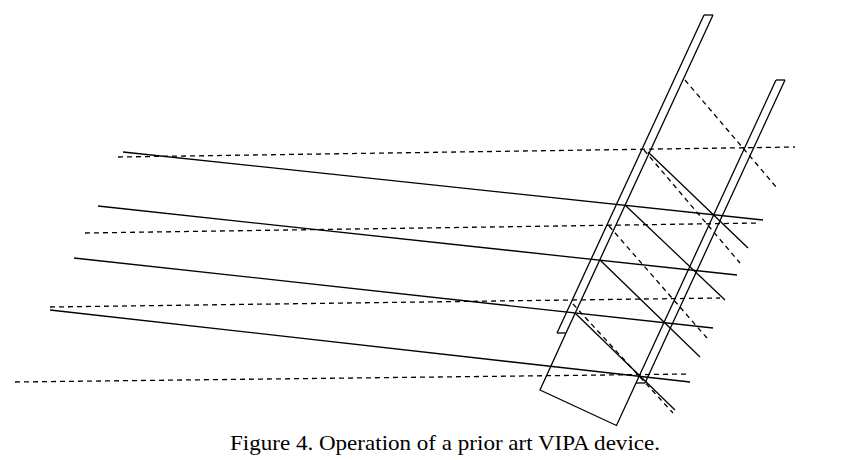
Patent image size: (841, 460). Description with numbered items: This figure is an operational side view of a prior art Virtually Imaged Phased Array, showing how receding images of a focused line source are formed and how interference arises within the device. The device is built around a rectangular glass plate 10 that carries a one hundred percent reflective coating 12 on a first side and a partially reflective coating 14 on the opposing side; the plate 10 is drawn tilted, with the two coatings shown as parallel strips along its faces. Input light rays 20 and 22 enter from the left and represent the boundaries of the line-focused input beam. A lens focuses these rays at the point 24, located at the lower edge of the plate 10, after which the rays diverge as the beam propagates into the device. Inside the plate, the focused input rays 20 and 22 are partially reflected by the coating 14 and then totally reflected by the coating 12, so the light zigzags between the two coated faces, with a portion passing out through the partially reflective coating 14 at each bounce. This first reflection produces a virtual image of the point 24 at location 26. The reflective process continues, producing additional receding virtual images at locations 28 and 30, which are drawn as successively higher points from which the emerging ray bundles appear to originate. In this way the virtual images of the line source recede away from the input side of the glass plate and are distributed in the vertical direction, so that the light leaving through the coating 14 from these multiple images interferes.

The glass plate 10 is at (682, 220).
The reflective coating 12 is at (635, 174).
The partially reflective coating 14 is at (783, 110).
The input light ray 20 is at (352, 388).
The input light ray 22 is at (370, 346).
The focal point 24 is at (639, 380).
The virtual image location 26 is at (393, 293).
The virtual image location 28 is at (417, 240).
The virtual image location 30 is at (443, 186).